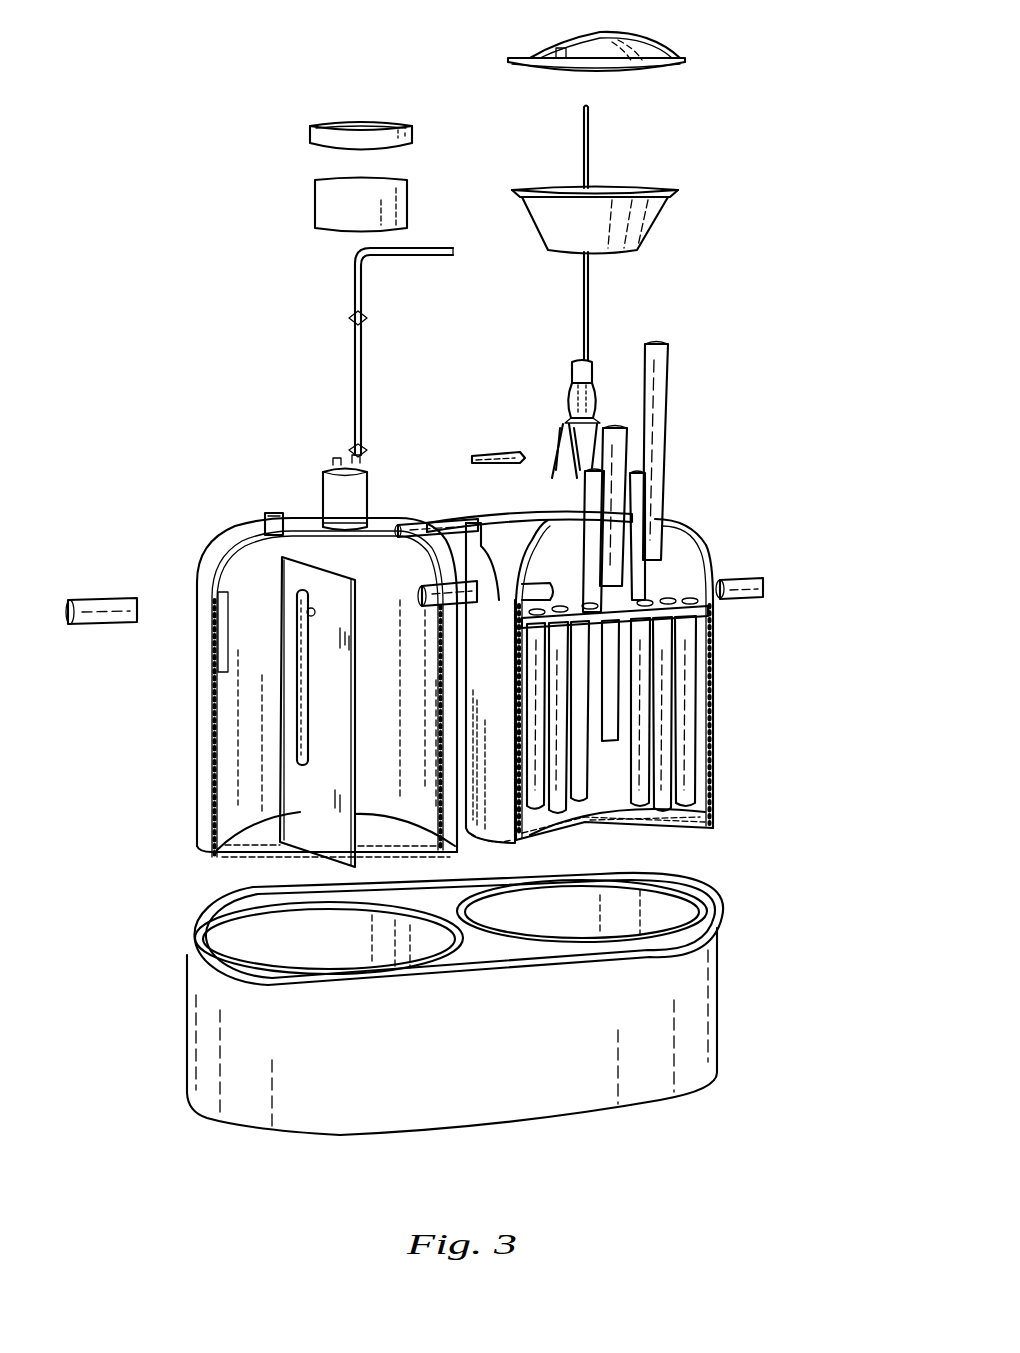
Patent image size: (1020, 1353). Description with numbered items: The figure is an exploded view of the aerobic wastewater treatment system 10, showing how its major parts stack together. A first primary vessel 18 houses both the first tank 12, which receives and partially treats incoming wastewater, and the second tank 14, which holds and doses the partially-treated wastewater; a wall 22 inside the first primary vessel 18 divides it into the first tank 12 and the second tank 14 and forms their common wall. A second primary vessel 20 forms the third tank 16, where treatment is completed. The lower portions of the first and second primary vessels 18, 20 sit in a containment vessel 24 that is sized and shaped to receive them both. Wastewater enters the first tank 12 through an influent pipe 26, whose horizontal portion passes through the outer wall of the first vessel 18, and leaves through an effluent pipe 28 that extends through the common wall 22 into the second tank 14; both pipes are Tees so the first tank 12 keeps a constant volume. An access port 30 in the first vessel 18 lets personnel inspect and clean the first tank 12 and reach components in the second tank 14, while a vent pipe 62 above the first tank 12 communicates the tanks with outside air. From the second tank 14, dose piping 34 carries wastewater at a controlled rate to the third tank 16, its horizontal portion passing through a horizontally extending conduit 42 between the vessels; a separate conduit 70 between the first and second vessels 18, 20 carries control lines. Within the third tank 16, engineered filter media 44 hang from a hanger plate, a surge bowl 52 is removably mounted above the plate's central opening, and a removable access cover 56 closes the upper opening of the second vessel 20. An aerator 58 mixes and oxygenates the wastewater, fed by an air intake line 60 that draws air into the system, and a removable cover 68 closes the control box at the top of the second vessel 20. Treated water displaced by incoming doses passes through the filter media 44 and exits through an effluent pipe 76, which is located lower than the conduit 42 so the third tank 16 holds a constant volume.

The aerobic wastewater treatment system 10 is at (155, 96).
The first tank 12 is at (242, 840).
The second tank 14 is at (392, 832).
The third tank 16 is at (624, 814).
The first primary vessel 18 is at (198, 700).
The second primary vessel 20 is at (716, 748).
The wall 22 is at (326, 580).
The containment vessel 24 is at (517, 1120).
The influent pipe 26 is at (98, 600).
The effluent pipe 28 is at (300, 716).
The access port 30 is at (332, 122).
The dose piping 34 is at (362, 366).
The conduit 42 is at (466, 525).
The engineered filter media 44 is at (692, 645).
The surge bowl 52 is at (655, 229).
The access cover 56 is at (652, 42).
The aerator 58 is at (592, 396).
The air intake line 60 is at (590, 152).
The vent pipe 62 is at (266, 518).
The removable cover 68 is at (500, 455).
The conduit 70 is at (440, 530).
The effluent pipe 76 is at (742, 578).